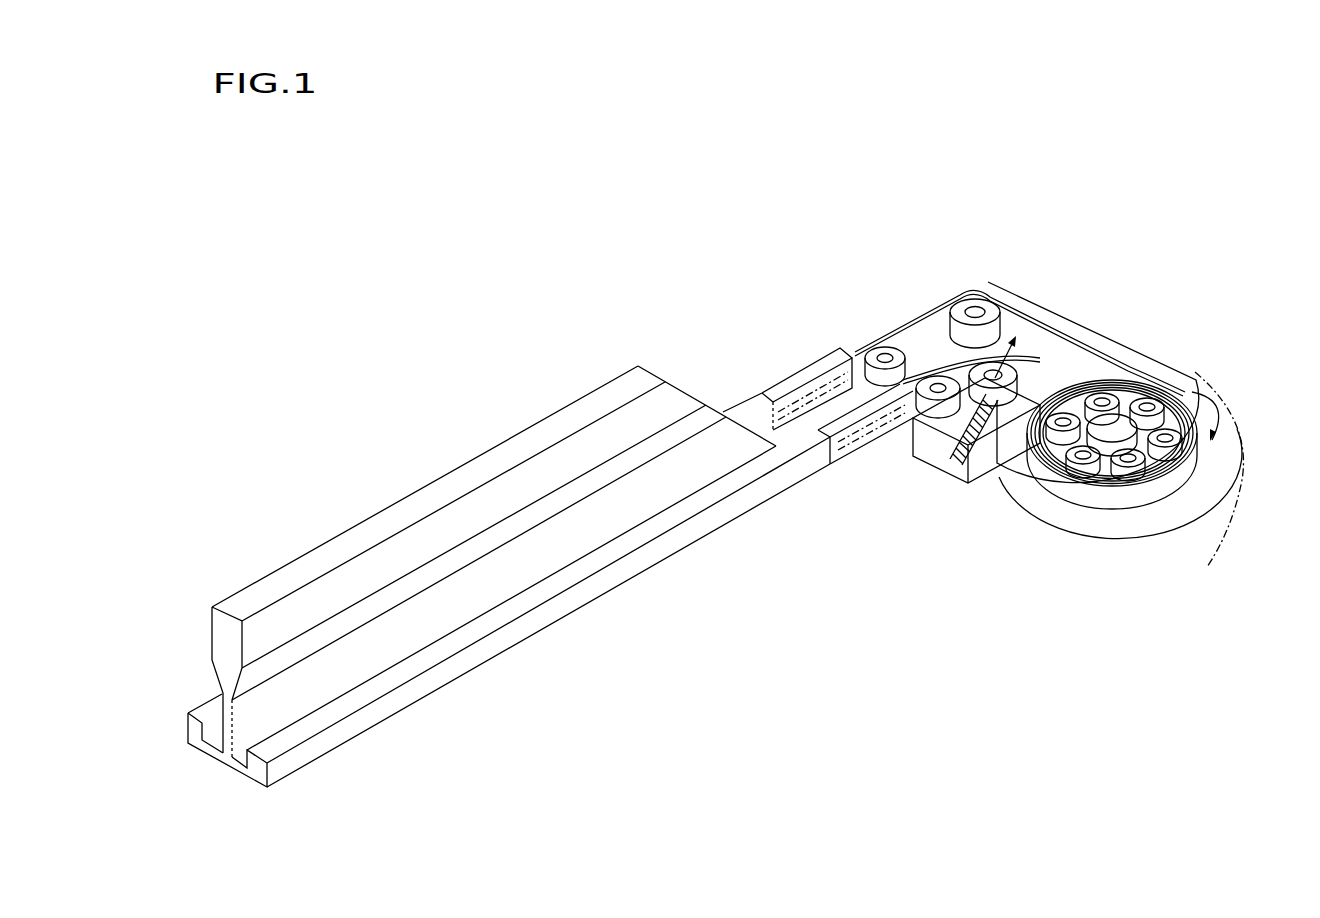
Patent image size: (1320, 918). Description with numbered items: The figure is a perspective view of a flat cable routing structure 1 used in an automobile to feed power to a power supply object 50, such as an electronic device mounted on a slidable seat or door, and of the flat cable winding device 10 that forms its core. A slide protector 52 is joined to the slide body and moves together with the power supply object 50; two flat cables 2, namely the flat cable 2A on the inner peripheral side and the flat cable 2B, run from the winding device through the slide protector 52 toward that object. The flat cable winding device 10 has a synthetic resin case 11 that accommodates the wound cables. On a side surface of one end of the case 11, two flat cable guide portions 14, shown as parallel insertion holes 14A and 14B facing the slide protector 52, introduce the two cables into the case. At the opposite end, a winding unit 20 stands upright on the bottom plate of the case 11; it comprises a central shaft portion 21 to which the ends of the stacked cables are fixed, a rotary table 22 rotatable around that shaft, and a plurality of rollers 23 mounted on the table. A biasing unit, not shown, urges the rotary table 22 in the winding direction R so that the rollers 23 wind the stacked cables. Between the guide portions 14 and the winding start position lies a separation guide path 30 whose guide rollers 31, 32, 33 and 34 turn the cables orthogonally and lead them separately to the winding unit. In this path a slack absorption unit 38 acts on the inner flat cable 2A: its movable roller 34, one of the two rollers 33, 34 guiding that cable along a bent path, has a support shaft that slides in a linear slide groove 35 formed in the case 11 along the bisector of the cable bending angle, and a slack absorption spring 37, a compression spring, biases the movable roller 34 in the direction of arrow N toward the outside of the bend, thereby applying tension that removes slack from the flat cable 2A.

The flat cable routing structure 1 is at (710, 308).
The flat cables 2 is at (829, 409).
The flat cable 2A is at (877, 484).
The flat cable 2B is at (803, 331).
The flat cable guide portions 14 is at (831, 326).
The flat cable guide portion 14A is at (890, 433).
The flat cable guide portion 14B is at (850, 350).
The flat cable winding device 10 is at (1113, 303).
The case 11 is at (1200, 370).
The winding unit 20 is at (1139, 430).
The central shaft portion 21 is at (1113, 435).
The rotary table 22 is at (1148, 497).
The rollers 23 is at (1160, 445).
The separation guide path 30 is at (1023, 302).
The guide roller 31 is at (887, 345).
The guide roller 32 is at (976, 298).
The roller 33 is at (942, 413).
The movable roller 34 is at (1010, 410).
The slide groove 35 is at (993, 435).
The slack absorption spring 37 is at (963, 457).
The slack absorption unit 38 is at (976, 507).
The power supply object 50 is at (492, 447).
The slide protector 52 is at (780, 487).
The arrow N is at (1045, 315).
The winding direction R is at (1217, 390).